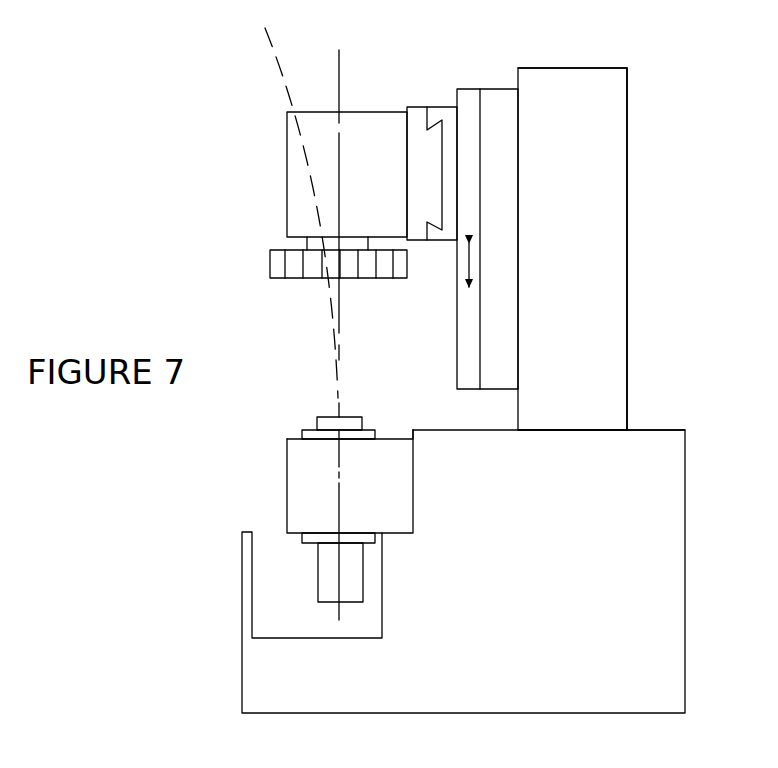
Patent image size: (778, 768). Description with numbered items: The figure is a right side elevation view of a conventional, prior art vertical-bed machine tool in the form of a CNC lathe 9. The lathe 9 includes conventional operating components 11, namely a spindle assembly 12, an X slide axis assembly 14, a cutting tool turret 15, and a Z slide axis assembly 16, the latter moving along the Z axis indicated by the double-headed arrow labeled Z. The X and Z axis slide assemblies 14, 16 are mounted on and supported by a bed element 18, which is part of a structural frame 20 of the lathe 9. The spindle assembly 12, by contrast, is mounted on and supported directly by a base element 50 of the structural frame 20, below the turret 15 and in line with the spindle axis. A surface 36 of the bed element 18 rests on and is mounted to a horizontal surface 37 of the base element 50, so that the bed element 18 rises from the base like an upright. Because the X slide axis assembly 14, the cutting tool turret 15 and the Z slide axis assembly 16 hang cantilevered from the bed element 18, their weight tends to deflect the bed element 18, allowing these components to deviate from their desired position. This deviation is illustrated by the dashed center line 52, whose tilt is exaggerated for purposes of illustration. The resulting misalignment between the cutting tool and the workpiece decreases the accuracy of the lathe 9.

The CNC lathe 9 is at (506, 36).
The operating components 11 is at (265, 148).
The spindle assembly 12 is at (293, 450).
The X slide axis assembly 14 is at (417, 111).
The cutting tool turret 15 is at (275, 258).
The Z slide axis assembly 16 is at (492, 95).
The bed element 18 is at (592, 75).
The structural frame 20 is at (670, 347).
The surface of the bed element 36 is at (565, 431).
The horizontal surface of the base element 37 is at (625, 428).
The base element 50 is at (575, 605).
The dashed center line 52 is at (262, 42).
The Z axis Z is at (466, 265).